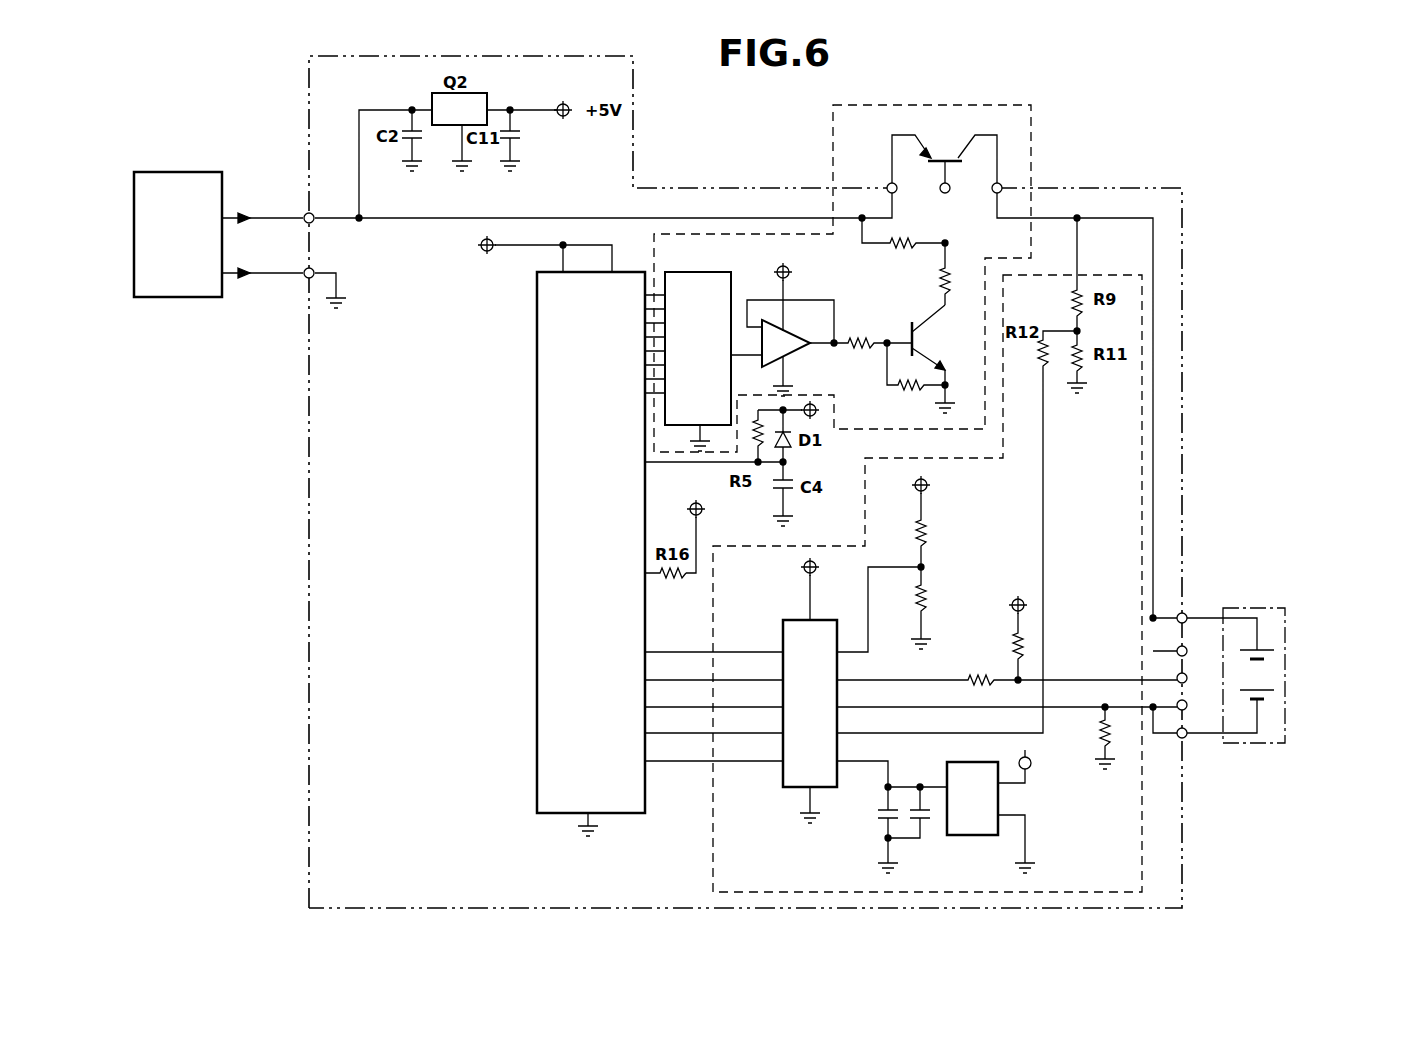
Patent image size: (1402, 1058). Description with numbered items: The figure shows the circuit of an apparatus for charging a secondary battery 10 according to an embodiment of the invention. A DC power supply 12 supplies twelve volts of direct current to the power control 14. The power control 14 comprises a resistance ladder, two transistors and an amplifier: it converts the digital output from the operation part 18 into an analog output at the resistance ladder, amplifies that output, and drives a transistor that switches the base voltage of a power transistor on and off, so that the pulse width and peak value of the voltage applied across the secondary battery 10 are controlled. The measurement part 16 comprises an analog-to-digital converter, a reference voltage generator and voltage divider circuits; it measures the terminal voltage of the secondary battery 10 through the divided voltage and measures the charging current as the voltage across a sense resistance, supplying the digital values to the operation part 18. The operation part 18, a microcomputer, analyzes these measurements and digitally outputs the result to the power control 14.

The secondary battery 10 is at (1285, 645).
The DC power supply 12 is at (150, 297).
The power control 14 is at (1033, 138).
The measurement part 16 is at (1145, 826).
The operation part 18 is at (537, 433).